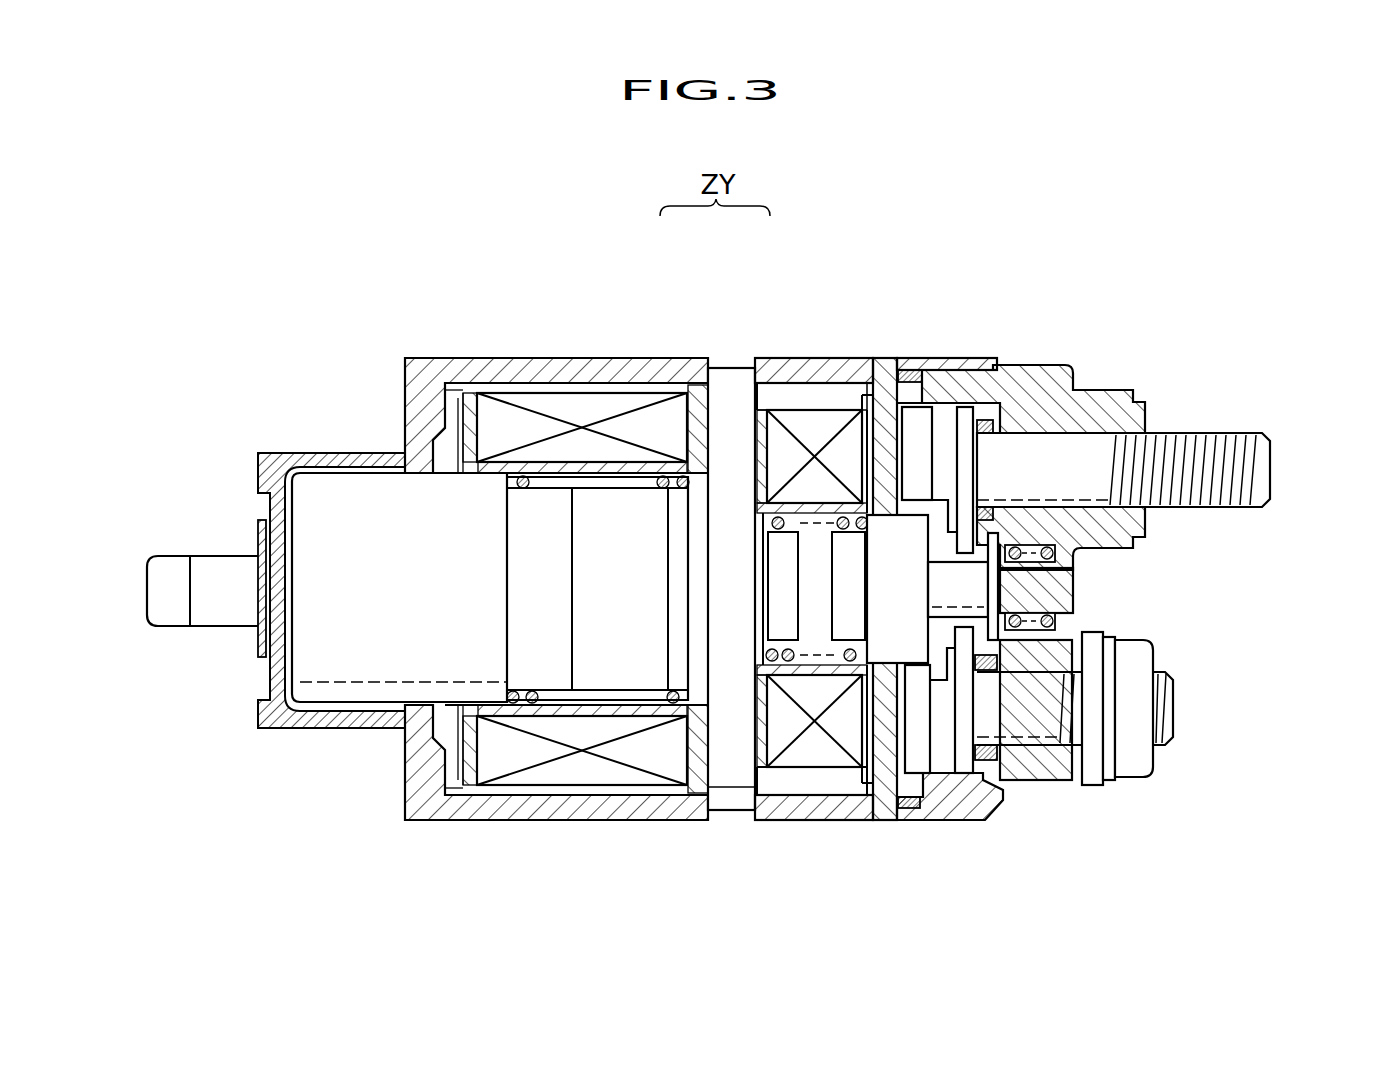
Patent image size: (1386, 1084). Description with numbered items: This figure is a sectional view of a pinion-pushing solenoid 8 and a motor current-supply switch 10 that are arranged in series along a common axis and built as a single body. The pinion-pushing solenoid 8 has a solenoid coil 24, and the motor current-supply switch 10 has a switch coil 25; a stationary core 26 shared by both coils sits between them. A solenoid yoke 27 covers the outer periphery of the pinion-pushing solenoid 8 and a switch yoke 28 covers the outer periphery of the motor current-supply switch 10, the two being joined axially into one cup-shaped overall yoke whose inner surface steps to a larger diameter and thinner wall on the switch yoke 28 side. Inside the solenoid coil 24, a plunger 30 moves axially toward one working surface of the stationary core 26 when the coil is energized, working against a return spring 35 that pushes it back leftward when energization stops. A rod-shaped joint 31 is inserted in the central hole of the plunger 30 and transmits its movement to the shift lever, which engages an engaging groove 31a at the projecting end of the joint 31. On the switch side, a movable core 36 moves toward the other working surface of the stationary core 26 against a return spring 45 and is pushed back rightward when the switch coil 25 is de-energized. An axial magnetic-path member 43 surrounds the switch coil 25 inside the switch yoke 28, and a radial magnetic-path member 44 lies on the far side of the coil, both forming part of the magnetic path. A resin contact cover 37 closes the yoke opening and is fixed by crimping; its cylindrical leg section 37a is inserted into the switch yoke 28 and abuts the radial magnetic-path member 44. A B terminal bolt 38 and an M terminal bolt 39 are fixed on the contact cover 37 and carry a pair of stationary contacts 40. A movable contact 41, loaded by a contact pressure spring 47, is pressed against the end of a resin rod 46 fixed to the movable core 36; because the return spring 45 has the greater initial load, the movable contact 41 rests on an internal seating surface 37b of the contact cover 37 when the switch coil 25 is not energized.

The pinion-pushing solenoid 8 is at (446, 352).
The motor current-supply switch 10 is at (882, 352).
The solenoid coil 24 is at (550, 405).
The switch coil 25 is at (803, 430).
The stationary core 26 is at (728, 398).
The solenoid yoke 27 is at (636, 375).
The switch yoke 28 is at (800, 375).
The plunger 30 is at (335, 523).
The joint 31 is at (163, 612).
The engaging groove 31a is at (222, 603).
The return spring 35 is at (526, 705).
The movable core 36 is at (902, 540).
The contact cover 37 is at (1056, 386).
The leg section 37a is at (942, 812).
The internal seating surface 37b is at (1040, 598).
The B terminal bolt 38 is at (1245, 472).
The M terminal bolt 39 is at (1180, 725).
The stationary contacts 40 is at (968, 475).
The movable contact 41 is at (1073, 572).
The axial magnetic-path member 43 is at (762, 792).
The radial magnetic-path member 44 is at (887, 808).
The return spring 45 is at (833, 680).
The resin rod 46 is at (947, 600).
The contact pressure spring 47 is at (1040, 618).